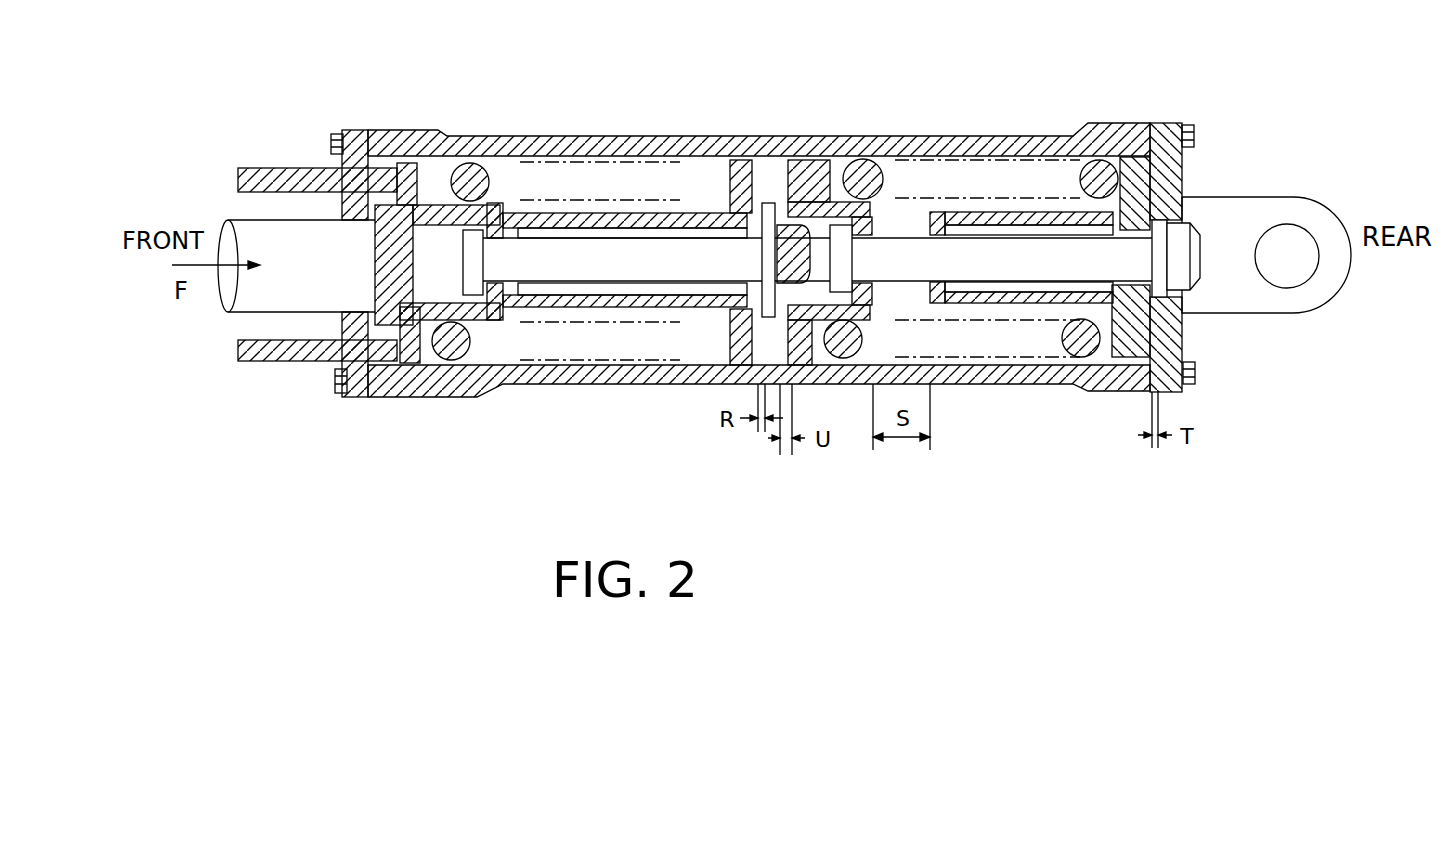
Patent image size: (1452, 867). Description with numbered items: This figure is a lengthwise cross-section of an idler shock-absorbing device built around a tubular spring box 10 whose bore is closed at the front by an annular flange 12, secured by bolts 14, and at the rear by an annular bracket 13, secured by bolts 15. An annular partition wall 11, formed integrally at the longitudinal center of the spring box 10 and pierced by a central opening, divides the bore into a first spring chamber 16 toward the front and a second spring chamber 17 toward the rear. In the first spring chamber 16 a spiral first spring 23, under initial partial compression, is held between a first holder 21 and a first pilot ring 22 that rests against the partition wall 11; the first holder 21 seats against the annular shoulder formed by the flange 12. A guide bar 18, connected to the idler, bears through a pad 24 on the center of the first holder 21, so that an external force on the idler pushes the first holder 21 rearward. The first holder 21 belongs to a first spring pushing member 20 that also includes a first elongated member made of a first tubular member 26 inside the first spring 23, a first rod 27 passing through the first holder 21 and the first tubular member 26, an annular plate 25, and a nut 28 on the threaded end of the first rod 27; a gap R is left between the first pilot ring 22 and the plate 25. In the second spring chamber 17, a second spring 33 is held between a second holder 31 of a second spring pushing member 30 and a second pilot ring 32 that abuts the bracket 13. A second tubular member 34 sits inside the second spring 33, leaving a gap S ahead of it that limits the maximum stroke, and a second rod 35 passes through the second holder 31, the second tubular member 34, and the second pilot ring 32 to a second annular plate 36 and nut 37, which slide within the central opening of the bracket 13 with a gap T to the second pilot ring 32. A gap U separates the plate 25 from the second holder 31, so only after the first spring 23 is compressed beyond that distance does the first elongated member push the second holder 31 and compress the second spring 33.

The spring box 10 is at (637, 150).
The annular partition wall 11 is at (768, 205).
The annular flange 12 is at (275, 362).
The annular bracket 13 is at (1165, 128).
The bolts 14 is at (345, 398).
The bolts 15 is at (1190, 135).
The first spring chamber 16 is at (567, 386).
The second spring chamber 17 is at (953, 386).
The guide bar 18 is at (262, 235).
The first spring pushing member 20 is at (514, 205).
The first holder 21 is at (413, 215).
The first pilot ring 22 is at (736, 185).
The first spring 23 is at (462, 165).
The pad 24 is at (386, 257).
The annular plate 25 is at (760, 260).
The first tubular member 26 is at (515, 312).
The first rod 27 is at (585, 250).
The nut 28 is at (782, 180).
The second spring pushing member 30 is at (957, 205).
The second holder 31 is at (812, 167).
The second pilot ring 32 is at (1135, 168).
The second spring 33 is at (855, 165).
The second tubular member 34 is at (985, 300).
The second rod 35 is at (1030, 270).
The second annular plate 36 is at (1167, 268).
The nut 37 is at (1188, 258).